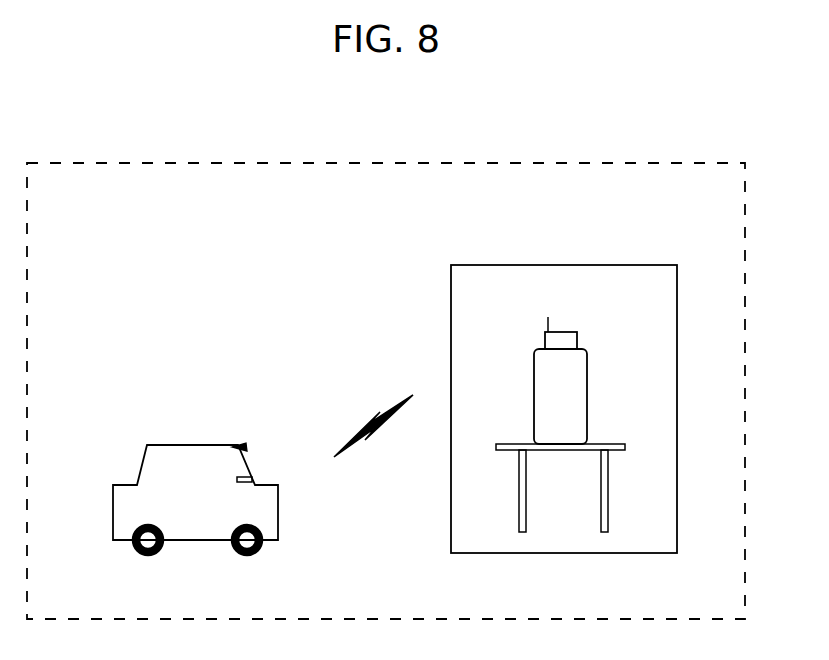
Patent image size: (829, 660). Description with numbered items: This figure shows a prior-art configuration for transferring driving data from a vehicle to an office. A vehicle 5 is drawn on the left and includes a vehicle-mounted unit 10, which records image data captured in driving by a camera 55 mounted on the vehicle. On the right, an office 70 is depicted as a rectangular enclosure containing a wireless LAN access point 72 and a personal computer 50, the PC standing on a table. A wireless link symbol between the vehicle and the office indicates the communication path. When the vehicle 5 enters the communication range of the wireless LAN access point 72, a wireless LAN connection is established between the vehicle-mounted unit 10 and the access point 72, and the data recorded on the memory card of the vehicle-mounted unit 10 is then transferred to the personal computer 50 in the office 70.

The vehicle 5 is at (125, 485).
The vehicle-mounted unit 10 is at (253, 478).
The camera 55 is at (246, 446).
The office 70 is at (541, 265).
The wireless LAN access point 72 is at (563, 332).
The personal computer 50 is at (588, 393).